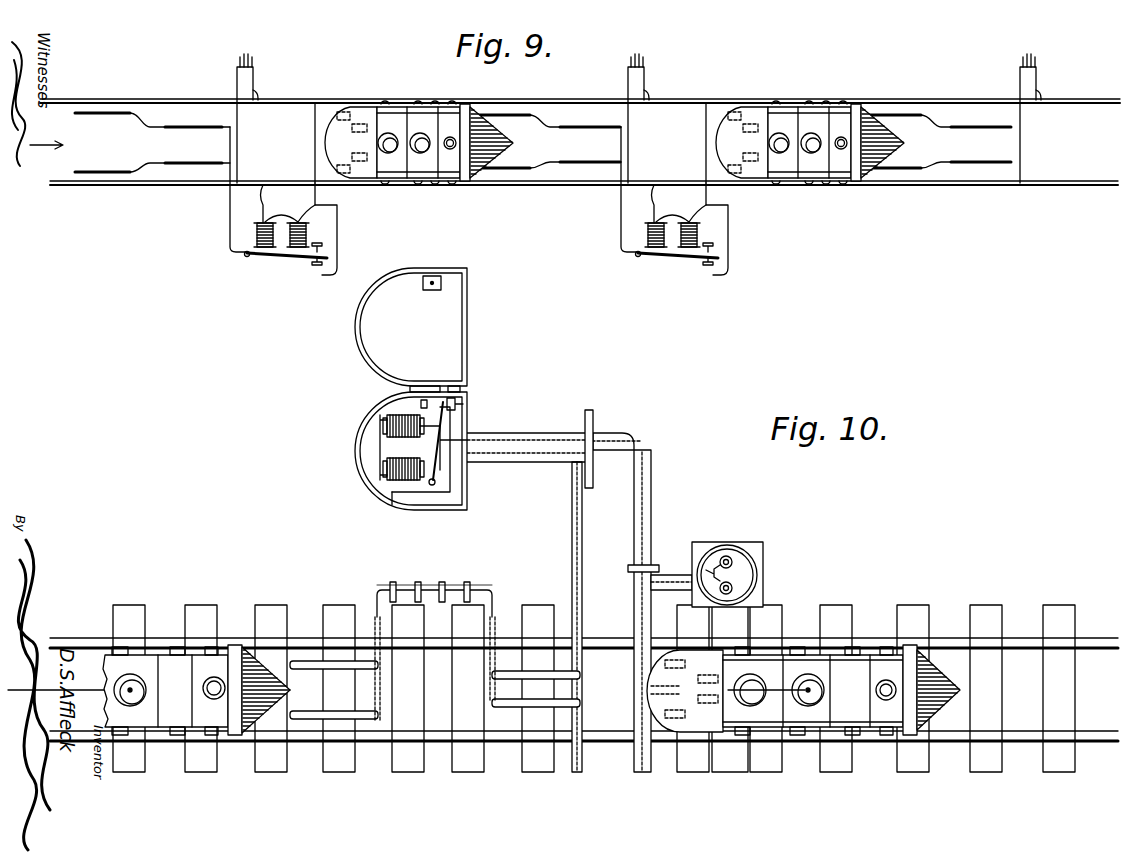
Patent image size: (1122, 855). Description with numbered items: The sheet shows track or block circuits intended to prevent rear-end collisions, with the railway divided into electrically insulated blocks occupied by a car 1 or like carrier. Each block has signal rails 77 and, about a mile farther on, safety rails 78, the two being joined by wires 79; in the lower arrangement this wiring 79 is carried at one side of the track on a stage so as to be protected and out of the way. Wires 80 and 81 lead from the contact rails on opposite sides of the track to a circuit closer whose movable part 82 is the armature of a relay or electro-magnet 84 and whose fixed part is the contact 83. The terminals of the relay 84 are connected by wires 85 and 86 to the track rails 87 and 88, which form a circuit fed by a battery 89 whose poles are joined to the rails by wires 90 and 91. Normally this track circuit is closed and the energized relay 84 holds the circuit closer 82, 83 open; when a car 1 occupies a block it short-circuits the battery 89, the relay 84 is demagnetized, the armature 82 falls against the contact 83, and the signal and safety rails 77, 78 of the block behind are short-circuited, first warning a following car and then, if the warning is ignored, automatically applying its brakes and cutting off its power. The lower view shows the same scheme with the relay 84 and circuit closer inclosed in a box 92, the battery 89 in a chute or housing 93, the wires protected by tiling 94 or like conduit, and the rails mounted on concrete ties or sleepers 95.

In FIG. 9, the car 1 is at (410, 106).
In FIG. 10, the car 1 is at (190, 720).
In FIG. 9, the signal rails 77 is at (502, 142).
In FIG. 10, the signal rails 77 is at (318, 686).
In FIG. 9, the safety rails 78 is at (588, 145).
In FIG. 10, the safety rails 78 is at (527, 674).
In FIG. 9, the wires 79 is at (543, 142).
In FIG. 10, the wires 79 is at (437, 591).
In FIG. 9, the wire 80 is at (225, 236).
In FIG. 10, the wire 80 is at (559, 457).
In FIG. 9, the wire 81 is at (340, 250).
In FIG. 10, the wire 81 is at (522, 460).
In FIG. 9, the circuit closer armature 82 is at (305, 262).
In FIG. 10, the circuit closer armature 82 is at (444, 440).
In FIG. 9, the circuit closer contact 83 is at (320, 272).
In FIG. 10, the circuit closer contact 83 is at (463, 405).
In FIG. 9, the relay or electro-magnet 84 is at (281, 252).
In FIG. 10, the relay or electro-magnet 84 is at (403, 447).
In FIG. 9, the wire 85 is at (259, 184).
In FIG. 10, the wire 85 is at (408, 494).
In FIG. 9, the wire 86 is at (313, 146).
In FIG. 10, the wire 86 is at (388, 416).
In FIG. 9, the track rail 87 is at (953, 100).
In FIG. 10, the track rail 87 is at (937, 639).
In FIG. 9, the track rail 88 is at (995, 186).
In FIG. 10, the track rail 88 is at (1015, 731).
In FIG. 9, the battery 89 is at (253, 62).
In FIG. 10, the battery 89 is at (742, 583).
In FIG. 9, the wire 90 is at (236, 81).
In FIG. 9, the wire 91 is at (256, 86).
In FIG. 10, the box 92 is at (359, 468).
In FIG. 10, the chute or housing 93 is at (750, 552).
In FIG. 10, the tiling or conduit 94 is at (572, 543).
In FIG. 10, the concrete ties or sleepers 95 is at (390, 769).